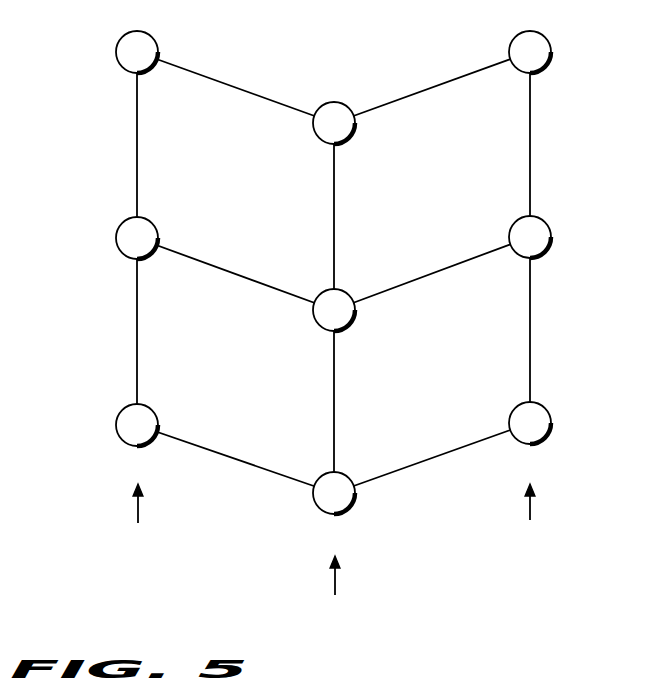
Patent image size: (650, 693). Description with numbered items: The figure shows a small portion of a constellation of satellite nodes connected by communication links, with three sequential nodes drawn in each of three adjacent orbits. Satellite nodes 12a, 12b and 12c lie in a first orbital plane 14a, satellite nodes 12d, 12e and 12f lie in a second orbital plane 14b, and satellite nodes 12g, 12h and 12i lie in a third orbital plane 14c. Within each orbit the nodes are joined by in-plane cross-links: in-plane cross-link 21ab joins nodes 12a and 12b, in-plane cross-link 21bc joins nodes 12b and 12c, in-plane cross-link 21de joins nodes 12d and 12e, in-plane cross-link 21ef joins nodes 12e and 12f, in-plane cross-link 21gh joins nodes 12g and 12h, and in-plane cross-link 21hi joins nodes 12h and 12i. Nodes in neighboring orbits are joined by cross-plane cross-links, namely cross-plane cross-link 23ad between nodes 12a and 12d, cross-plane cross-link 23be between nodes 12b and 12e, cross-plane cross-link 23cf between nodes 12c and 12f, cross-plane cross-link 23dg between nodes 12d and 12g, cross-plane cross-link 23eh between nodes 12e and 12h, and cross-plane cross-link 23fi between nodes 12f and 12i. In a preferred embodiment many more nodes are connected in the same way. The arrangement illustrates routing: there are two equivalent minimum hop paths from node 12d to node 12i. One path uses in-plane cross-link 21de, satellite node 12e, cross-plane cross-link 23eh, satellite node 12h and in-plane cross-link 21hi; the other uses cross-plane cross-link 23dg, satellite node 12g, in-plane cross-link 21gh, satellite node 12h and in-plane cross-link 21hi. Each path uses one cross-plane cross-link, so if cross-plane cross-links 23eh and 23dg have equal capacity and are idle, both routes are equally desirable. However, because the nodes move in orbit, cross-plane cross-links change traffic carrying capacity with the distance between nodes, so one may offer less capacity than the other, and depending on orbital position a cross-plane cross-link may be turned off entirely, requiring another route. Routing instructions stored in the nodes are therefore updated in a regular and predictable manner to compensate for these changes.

The satellite node 12a is at (118, 420).
The satellite node 12b is at (118, 231).
The satellite node 12c is at (118, 45).
The satellite node 12d is at (352, 505).
The satellite node 12e is at (352, 322).
The satellite node 12f is at (352, 140).
The satellite node 12g is at (548, 415).
The satellite node 12h is at (548, 230).
The satellite node 12i is at (548, 43).
The in-plane cross-link 21ab is at (137, 335).
The in-plane cross-link 21bc is at (137, 148).
The in-plane cross-link 21de is at (334, 396).
The in-plane cross-link 21ef is at (334, 213).
The in-plane cross-link 21gh is at (530, 335).
The in-plane cross-link 21hi is at (530, 148).
The cross-plane cross-link 23ad is at (228, 459).
The cross-plane cross-link 23be is at (231, 274).
The cross-plane cross-link 23cf is at (228, 86).
The cross-plane cross-link 23dg is at (437, 455).
The cross-plane cross-link 23eh is at (437, 268).
The cross-plane cross-link 23fi is at (437, 85).
The orbital plane 14a is at (139, 521).
The orbital plane 14b is at (336, 592).
The orbital plane 14c is at (531, 521).